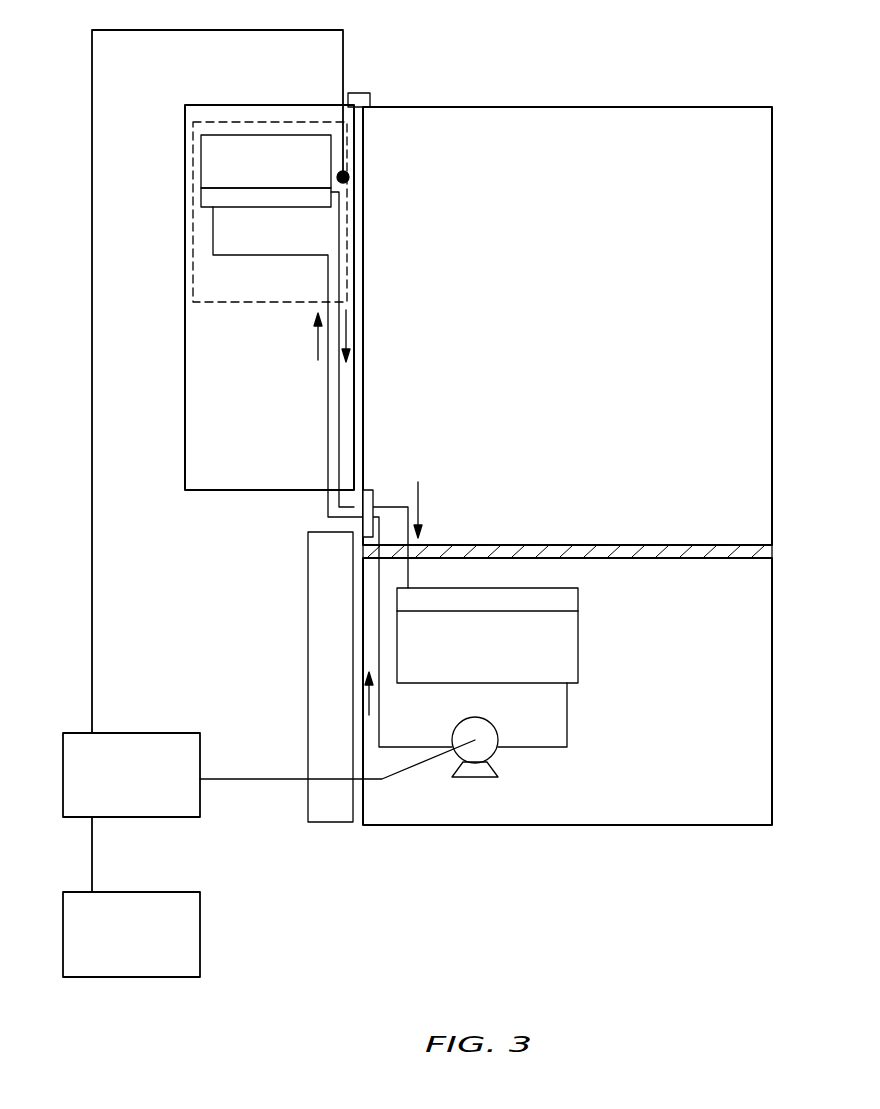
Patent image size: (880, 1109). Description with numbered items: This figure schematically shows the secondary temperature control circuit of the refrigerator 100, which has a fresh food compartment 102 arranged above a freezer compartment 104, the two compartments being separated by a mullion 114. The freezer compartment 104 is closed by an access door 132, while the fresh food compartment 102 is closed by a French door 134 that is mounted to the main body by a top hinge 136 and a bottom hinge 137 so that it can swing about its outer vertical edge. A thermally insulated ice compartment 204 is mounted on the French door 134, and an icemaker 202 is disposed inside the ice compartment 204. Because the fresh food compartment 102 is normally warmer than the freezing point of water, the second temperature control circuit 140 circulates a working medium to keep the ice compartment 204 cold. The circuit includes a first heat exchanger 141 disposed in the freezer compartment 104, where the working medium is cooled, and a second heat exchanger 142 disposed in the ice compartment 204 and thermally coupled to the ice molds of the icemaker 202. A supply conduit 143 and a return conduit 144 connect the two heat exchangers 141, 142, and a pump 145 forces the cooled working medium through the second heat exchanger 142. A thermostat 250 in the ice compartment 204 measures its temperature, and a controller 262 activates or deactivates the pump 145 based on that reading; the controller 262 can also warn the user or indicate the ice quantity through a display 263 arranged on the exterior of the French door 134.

The refrigerator 100 is at (567, 421).
The fresh food compartment 102 is at (683, 251).
The freezer compartment 104 is at (725, 600).
The mullion 114 is at (633, 544).
The access door 132 is at (350, 690).
The French door 134 is at (243, 464).
The top hinge 136 is at (358, 93).
The bottom hinge 137 is at (374, 498).
The second temperature control circuit 140 is at (282, 579).
The first heat exchanger 141 is at (579, 673).
The second heat exchanger 142 is at (207, 193).
The supply conduit 143 is at (283, 256).
The return conduit 144 is at (340, 396).
The pump 145 is at (475, 752).
The icemaker 202 is at (202, 160).
The ice compartment 204 is at (242, 122).
The thermostat 250 is at (349, 177).
The controller 262 is at (152, 790).
The display 263 is at (152, 949).